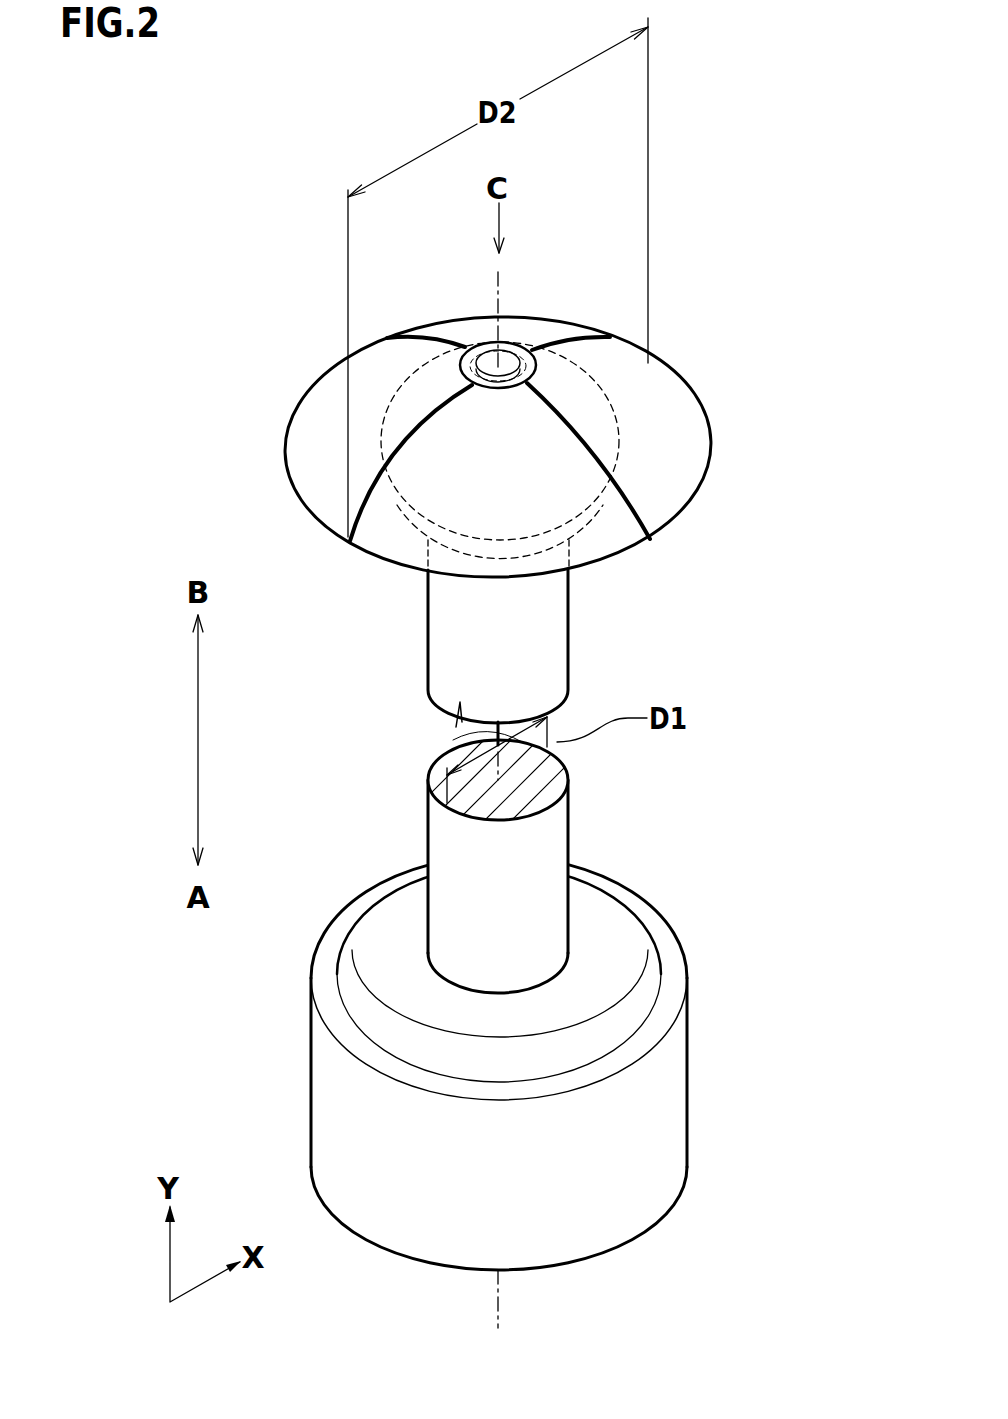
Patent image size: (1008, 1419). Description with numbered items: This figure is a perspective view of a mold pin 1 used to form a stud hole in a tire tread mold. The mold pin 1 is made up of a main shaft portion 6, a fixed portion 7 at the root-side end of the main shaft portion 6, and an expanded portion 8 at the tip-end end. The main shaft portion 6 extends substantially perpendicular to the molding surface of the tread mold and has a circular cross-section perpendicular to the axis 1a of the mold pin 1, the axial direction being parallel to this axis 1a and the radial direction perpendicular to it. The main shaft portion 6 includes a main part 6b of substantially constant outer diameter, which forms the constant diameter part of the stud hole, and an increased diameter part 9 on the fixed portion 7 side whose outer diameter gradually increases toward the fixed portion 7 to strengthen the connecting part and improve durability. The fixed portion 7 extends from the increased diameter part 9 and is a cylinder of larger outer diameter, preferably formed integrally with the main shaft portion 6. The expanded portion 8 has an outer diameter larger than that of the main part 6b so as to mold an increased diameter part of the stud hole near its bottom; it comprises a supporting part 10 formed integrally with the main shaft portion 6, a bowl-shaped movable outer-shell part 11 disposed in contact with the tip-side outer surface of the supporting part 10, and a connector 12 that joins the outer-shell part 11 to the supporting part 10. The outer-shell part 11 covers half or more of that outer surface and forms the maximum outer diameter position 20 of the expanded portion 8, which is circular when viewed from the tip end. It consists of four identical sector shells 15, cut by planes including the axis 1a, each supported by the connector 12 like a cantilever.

The mold pin 1 is at (527, 660).
The axis 1a is at (445, 741).
The main shaft portion 6 is at (574, 995).
The main part 6b is at (553, 860).
The fixed portion 7 is at (663, 1103).
The expanded portion 8 is at (517, 423).
The increased diameter part 9 is at (643, 995).
The supporting part 10 is at (617, 453).
The outer-shell part 11 is at (526, 437).
The connector 12 is at (507, 347).
The sector shell 15 is at (333, 400).
The maximum outer diameter position 20 is at (295, 490).